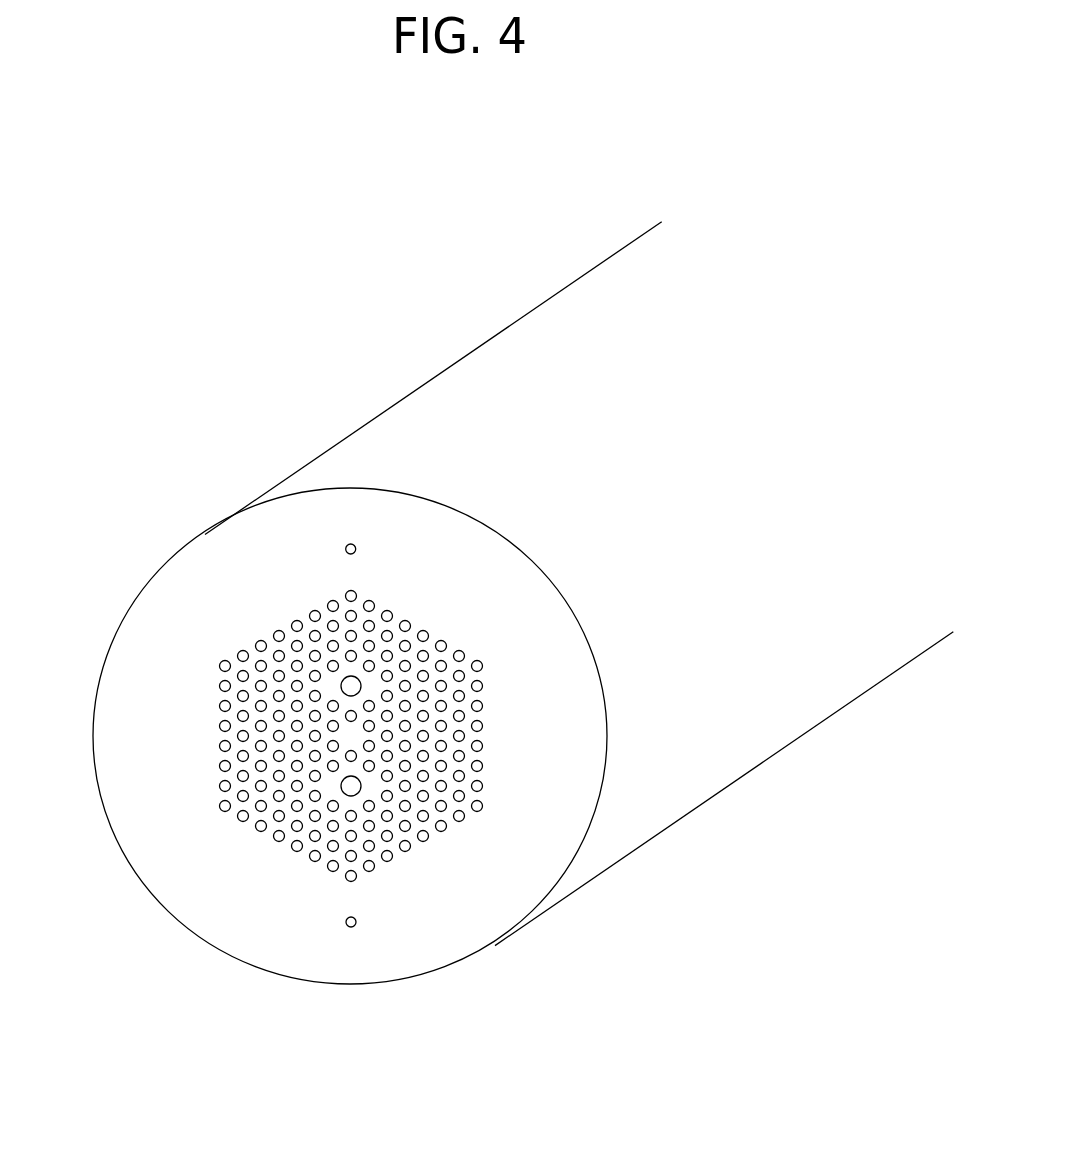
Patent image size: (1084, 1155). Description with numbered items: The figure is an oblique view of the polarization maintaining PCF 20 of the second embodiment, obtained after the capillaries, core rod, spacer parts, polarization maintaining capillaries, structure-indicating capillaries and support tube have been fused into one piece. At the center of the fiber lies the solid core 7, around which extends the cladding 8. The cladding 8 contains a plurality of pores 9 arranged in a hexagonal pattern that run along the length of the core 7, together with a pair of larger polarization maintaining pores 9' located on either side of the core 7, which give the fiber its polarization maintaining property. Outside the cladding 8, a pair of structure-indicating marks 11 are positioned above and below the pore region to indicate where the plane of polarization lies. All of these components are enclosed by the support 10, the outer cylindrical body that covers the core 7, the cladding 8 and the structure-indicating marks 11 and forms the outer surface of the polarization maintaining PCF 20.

The solid core 7 is at (351, 740).
The cladding 8 is at (257, 675).
The pores 9 is at (166, 824).
The polarization maintaining pores 9' is at (292, 870).
The support 10 is at (530, 852).
The structure-indicating marks 11 is at (350, 544).
The polarization maintaining PCF 20 is at (518, 320).